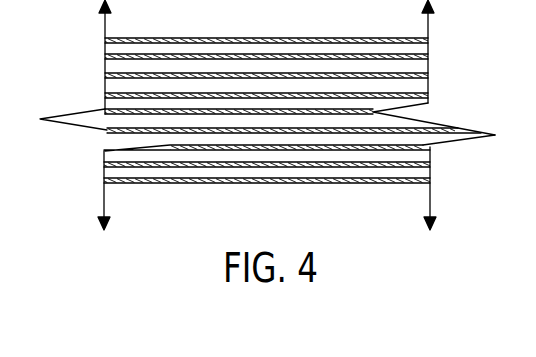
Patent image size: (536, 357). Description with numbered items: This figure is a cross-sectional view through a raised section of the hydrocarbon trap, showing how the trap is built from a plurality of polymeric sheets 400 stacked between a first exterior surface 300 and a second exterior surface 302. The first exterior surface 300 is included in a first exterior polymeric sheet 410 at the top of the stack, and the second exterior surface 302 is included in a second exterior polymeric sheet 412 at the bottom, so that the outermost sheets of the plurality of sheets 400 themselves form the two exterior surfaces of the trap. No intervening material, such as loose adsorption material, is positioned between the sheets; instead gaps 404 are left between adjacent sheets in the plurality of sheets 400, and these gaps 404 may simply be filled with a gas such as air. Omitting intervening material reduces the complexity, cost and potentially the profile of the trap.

The first exterior surface 300 is at (266, 38).
The second exterior surface 302 is at (263, 185).
The polymeric sheets 400 is at (432, 56).
The gaps 404 is at (110, 56).
The first exterior polymeric sheet 410 is at (278, 38).
The second exterior polymeric sheet 412 is at (280, 184).